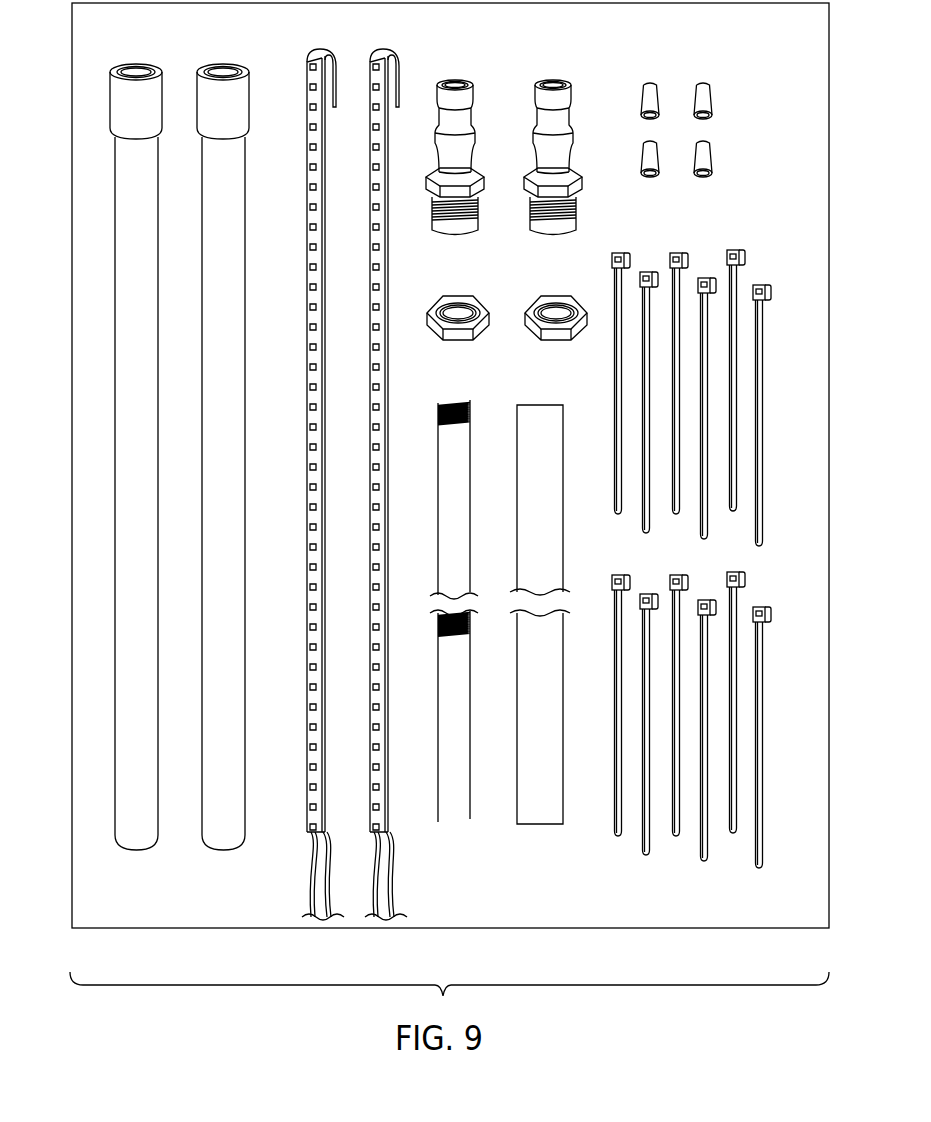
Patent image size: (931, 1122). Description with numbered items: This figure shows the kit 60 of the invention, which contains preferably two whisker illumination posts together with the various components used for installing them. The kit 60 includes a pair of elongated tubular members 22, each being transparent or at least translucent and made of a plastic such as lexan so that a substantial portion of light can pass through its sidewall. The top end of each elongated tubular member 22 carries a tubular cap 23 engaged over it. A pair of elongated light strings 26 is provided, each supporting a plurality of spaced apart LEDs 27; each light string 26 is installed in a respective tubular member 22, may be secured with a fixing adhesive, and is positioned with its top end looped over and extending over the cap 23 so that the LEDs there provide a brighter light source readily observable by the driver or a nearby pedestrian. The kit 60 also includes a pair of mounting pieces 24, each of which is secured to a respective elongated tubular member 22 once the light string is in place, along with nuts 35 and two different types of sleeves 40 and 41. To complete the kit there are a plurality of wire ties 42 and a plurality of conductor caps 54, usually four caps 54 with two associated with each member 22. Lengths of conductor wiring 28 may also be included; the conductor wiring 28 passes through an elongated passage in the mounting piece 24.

The elongated tubular member 22 is at (122, 413).
The tubular cap 23 is at (115, 108).
The mounting piece 24 is at (533, 91).
The light string 26 is at (372, 487).
The LEDs 27 is at (310, 457).
The conductor wiring 28 is at (399, 878).
The nuts 35 is at (537, 300).
The sleeve 40 is at (473, 440).
The sleeve 41 is at (567, 440).
The wire ties 42 is at (773, 386).
The conductor caps 54 is at (706, 85).
The kit 60 is at (604, 929).